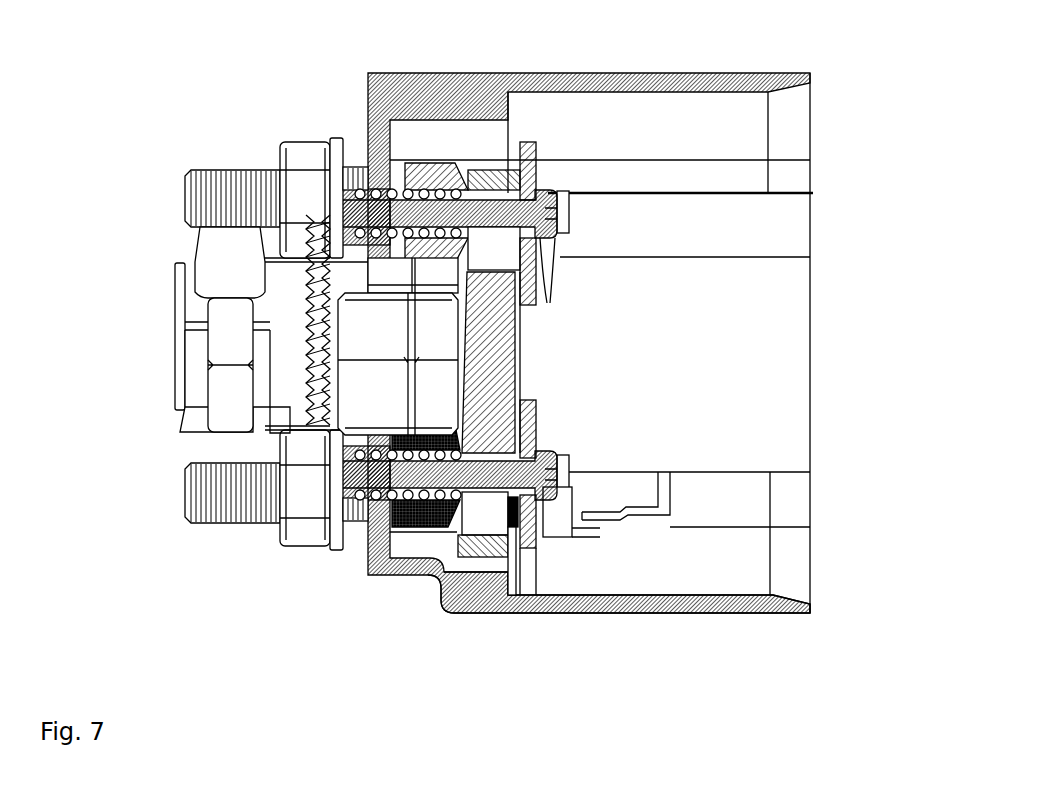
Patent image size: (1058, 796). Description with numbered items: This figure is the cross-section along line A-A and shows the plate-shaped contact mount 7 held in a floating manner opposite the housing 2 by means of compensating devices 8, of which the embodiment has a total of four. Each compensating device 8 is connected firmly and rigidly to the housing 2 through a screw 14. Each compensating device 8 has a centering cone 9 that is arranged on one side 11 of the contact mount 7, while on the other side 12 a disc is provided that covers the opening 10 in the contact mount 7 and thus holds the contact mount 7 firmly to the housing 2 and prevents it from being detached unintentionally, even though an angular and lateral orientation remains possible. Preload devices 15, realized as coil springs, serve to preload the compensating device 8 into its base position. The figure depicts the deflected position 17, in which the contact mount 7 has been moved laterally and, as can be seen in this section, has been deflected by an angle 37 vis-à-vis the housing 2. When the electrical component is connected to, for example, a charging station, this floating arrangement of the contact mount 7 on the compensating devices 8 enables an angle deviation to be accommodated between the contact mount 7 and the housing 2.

The deflected position 17 is at (140, 68).
The housing 2 is at (368, 73).
The contact mount 7 is at (515, 350).
The compensating device 8 is at (573, 223).
The centering cone 9 is at (427, 165).
The opening 10 is at (449, 615).
The one side 11 is at (445, 542).
The other side 12 is at (532, 558).
The screw 14 is at (543, 187).
The preload device 15 is at (450, 166).
The angle 37 is at (516, 600).